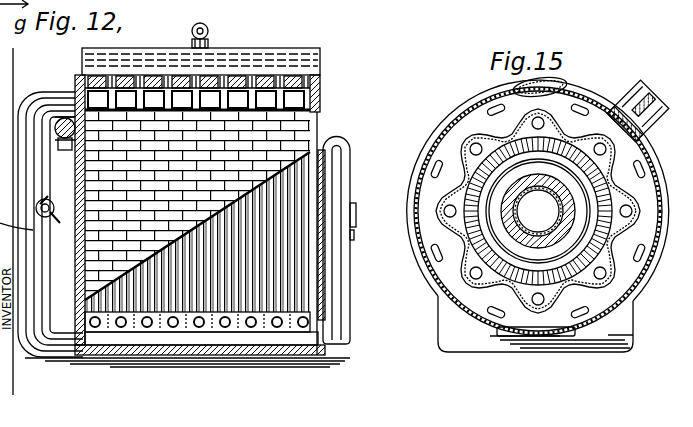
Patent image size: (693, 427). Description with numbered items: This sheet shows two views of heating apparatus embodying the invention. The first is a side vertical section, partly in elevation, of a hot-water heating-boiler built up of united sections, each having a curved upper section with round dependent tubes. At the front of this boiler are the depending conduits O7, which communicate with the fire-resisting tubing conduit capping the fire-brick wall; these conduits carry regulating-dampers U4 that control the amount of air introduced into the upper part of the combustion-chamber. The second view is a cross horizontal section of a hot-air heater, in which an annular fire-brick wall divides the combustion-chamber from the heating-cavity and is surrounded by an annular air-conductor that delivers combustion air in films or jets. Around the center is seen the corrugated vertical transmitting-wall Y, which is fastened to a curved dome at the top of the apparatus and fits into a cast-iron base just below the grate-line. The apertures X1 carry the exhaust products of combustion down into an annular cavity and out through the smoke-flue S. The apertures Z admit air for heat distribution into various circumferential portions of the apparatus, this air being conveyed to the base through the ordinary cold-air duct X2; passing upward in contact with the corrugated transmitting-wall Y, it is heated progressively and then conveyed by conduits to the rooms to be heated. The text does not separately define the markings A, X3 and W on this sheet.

In FIG. 12, the smoke-flue S is at (197, 331).
In FIG. 15, the smoke-flue S is at (565, 83).
In FIG. 12, the depending conduits O7 is at (320, 143).
In FIG. 12, the casing wall A is at (340, 282).
In FIG. 12, the regulating-dampers U4 is at (354, 212).
In FIG. 12, the lug X3 is at (374, 223).
In FIG. 15, the apertures Z is at (424, 157).
In FIG. 15, the corrugated vertical transmitting-wall Y is at (460, 133).
In FIG. 15, the scalloped flange W is at (620, 234).
In FIG. 15, the apertures X1 is at (599, 275).
In FIG. 15, the cold-air duct X2 is at (653, 98).